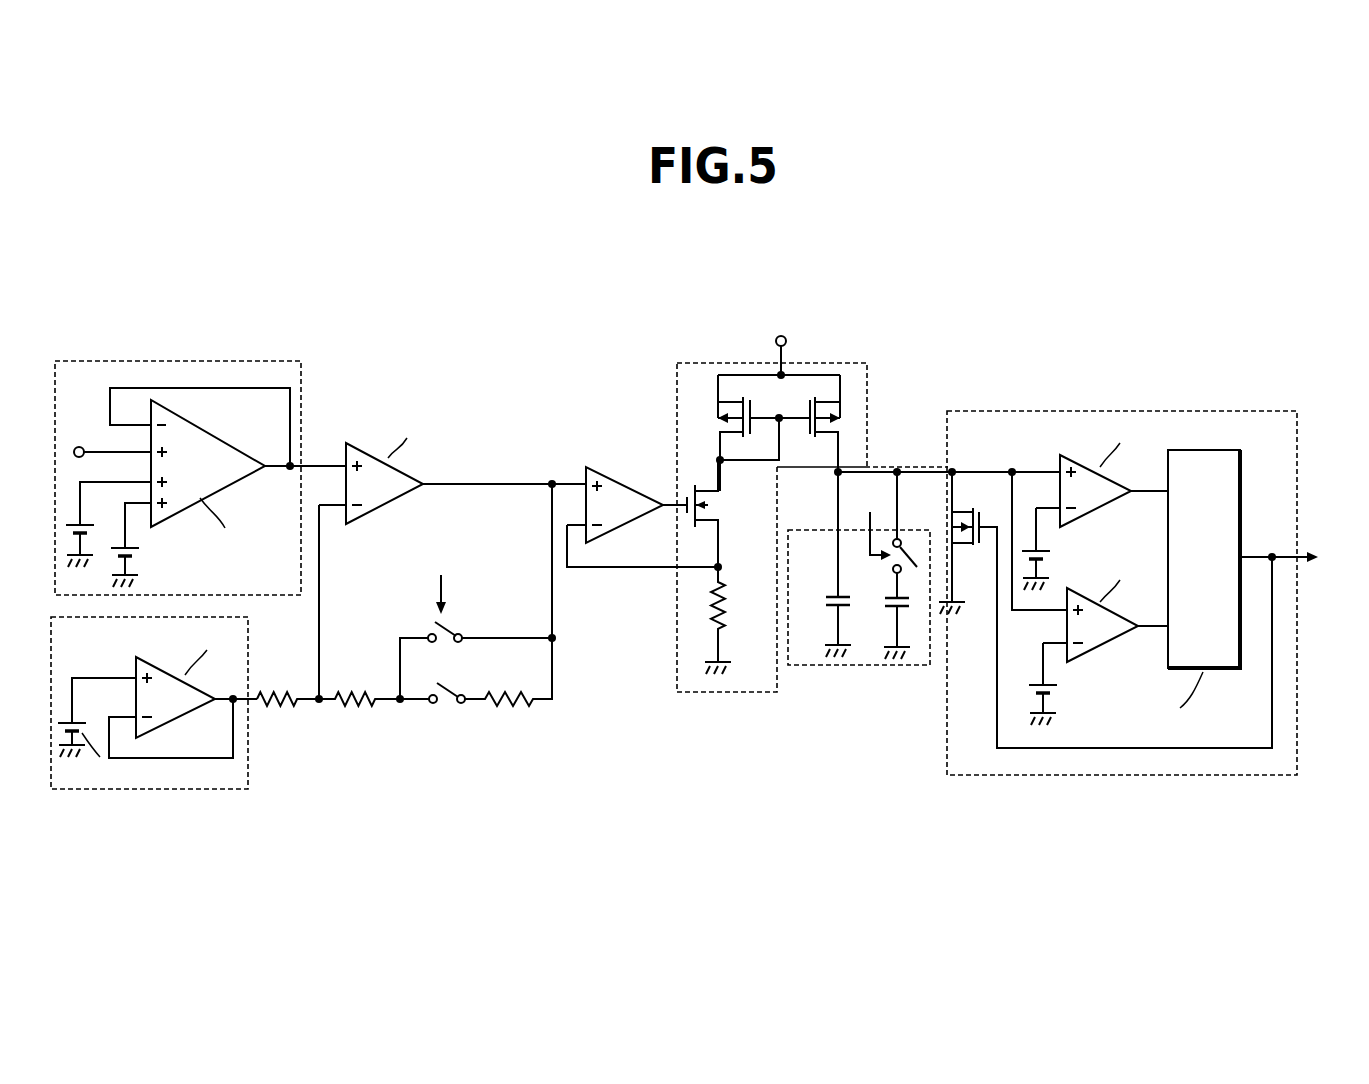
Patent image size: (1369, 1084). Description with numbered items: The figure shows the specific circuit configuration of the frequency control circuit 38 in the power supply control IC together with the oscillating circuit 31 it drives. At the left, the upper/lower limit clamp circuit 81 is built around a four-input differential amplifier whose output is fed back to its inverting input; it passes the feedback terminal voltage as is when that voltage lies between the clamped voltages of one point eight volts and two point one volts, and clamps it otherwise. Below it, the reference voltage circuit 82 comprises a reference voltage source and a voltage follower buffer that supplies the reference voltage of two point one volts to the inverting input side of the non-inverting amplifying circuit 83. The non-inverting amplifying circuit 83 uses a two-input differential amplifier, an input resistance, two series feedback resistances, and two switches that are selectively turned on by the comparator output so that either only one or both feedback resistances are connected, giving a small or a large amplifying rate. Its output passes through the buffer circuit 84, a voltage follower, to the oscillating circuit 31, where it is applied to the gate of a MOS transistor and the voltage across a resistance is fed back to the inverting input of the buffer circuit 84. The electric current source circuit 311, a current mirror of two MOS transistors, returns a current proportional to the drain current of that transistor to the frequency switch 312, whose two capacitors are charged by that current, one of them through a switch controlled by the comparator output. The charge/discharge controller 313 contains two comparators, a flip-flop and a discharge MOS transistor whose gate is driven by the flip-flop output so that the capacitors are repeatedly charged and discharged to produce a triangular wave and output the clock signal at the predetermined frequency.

The frequency control circuit 38 is at (414, 325).
The upper/lower limit clamp circuit 81 is at (193, 362).
The reference voltage circuit 82 is at (165, 793).
The non-inverting amplifying circuit 83 is at (567, 757).
The buffer circuit 84 is at (620, 477).
The oscillating circuit 31 is at (1300, 797).
The electric current source circuit 311 is at (830, 362).
The frequency switch 312 is at (817, 667).
The charge/discharge controller 313 is at (1157, 411).